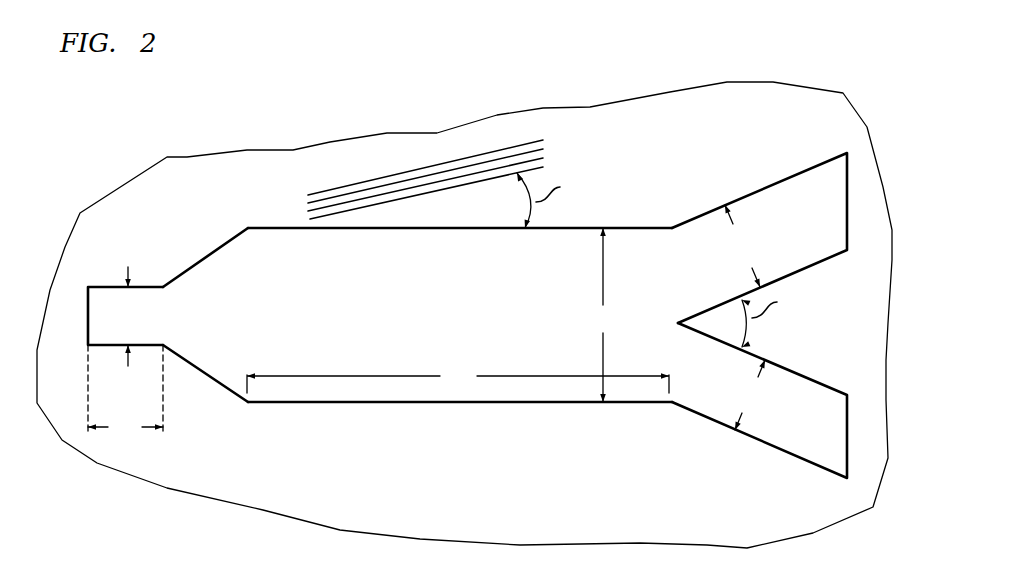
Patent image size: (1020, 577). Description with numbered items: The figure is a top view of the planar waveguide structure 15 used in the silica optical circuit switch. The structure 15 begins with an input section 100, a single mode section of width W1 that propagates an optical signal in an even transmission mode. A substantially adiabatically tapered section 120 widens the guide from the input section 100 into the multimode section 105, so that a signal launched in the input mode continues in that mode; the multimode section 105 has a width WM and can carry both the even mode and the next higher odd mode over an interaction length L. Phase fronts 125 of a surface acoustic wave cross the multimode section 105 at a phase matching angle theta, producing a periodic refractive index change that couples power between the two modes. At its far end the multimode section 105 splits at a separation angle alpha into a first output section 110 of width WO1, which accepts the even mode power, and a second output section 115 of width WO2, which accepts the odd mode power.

The planar waveguide structure 15 is at (88, 347).
The input section 100 is at (125, 353).
The multimode section 105 is at (473, 403).
The first output section 110 is at (800, 170).
The second output section 115 is at (787, 453).
The adiabatically tapered section 120 is at (203, 258).
The phase fronts of a surface acoustic wave 125 is at (308, 208).